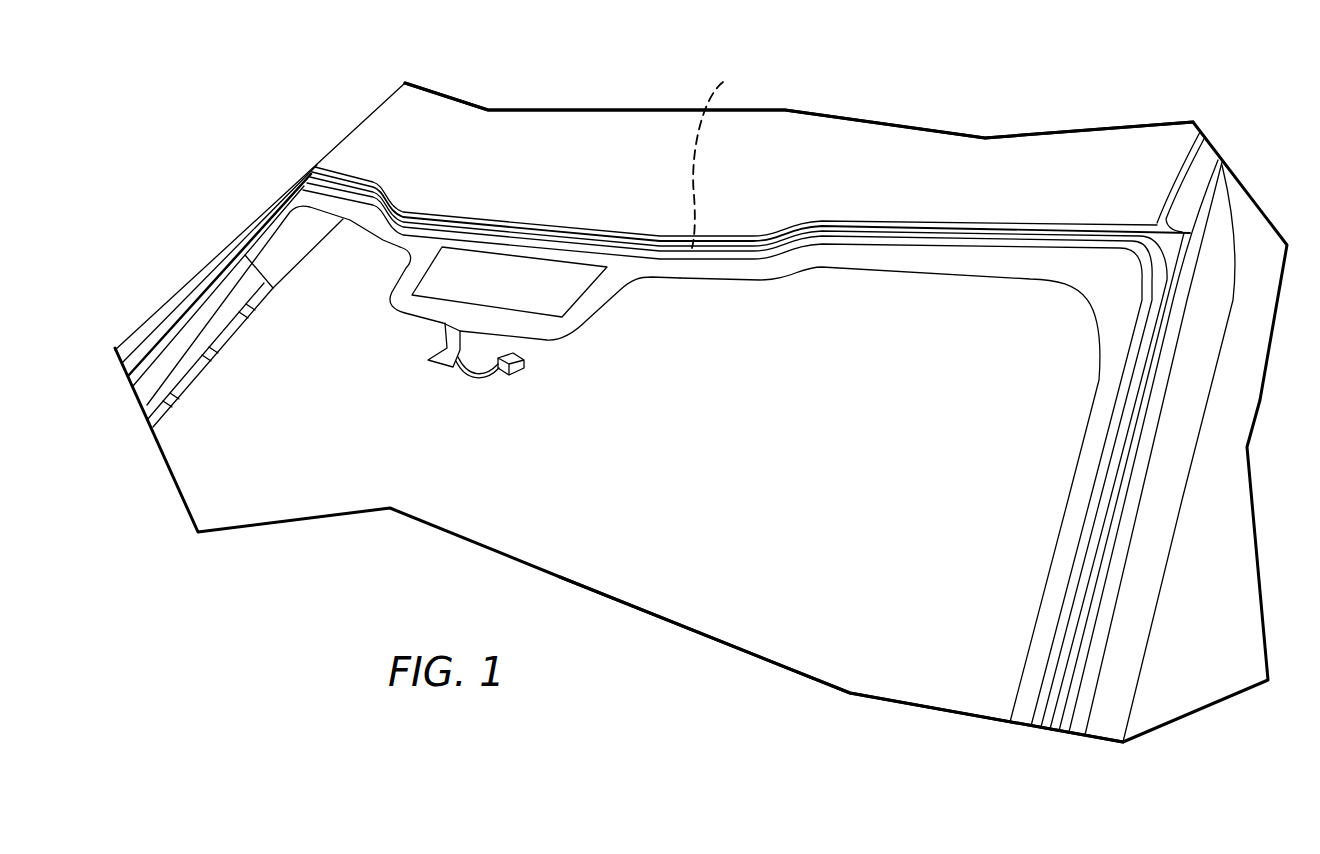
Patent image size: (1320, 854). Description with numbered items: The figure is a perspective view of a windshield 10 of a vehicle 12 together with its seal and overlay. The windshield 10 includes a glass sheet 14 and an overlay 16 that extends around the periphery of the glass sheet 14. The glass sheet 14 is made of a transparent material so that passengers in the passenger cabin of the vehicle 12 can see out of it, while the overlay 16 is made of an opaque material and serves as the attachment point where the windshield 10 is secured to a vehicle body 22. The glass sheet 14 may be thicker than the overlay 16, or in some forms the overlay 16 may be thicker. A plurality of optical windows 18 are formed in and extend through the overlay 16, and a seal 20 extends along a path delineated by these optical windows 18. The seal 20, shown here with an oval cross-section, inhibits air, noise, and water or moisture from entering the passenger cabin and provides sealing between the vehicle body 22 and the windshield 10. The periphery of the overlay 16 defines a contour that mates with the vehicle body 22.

The windshield 10 is at (405, 210).
The vehicle 12 is at (837, 136).
The glass sheet 14 is at (893, 563).
The overlay 16 is at (833, 237).
The optical windows 18 is at (993, 227).
The seal 20 is at (692, 253).
The vehicle body 22 is at (560, 214).